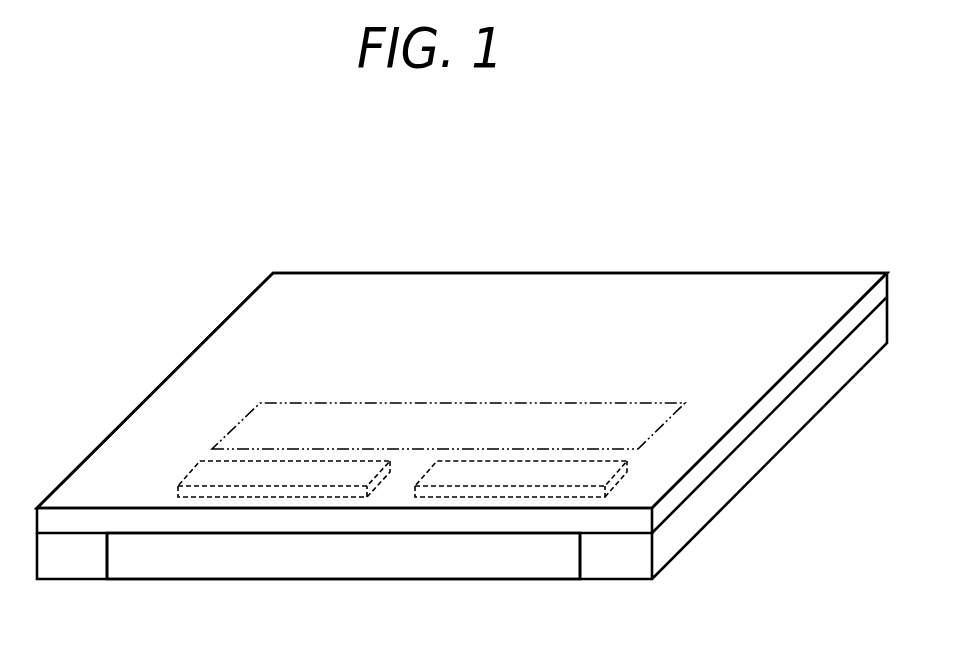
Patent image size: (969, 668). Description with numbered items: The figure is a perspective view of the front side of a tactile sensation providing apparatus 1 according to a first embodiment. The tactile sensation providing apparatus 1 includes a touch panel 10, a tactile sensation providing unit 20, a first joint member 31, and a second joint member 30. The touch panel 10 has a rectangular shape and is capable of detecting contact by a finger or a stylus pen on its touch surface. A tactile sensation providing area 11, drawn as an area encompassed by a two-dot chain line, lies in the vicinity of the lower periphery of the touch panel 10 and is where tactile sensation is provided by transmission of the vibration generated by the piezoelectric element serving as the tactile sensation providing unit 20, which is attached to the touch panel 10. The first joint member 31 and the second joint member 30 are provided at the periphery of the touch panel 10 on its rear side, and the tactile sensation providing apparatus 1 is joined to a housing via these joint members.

The tactile sensation providing apparatus 1 is at (414, 211).
The touch panel 10 is at (620, 280).
The tactile sensation providing area 11 is at (428, 403).
The tactile sensation providing unit 20 is at (258, 491).
The second joint member 30 is at (755, 459).
The first joint member 31 is at (355, 562).